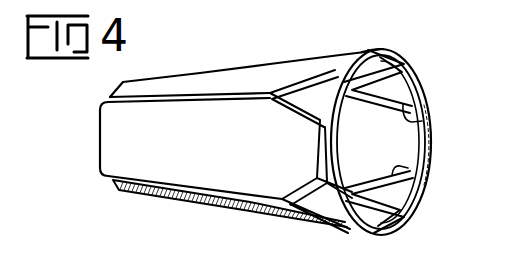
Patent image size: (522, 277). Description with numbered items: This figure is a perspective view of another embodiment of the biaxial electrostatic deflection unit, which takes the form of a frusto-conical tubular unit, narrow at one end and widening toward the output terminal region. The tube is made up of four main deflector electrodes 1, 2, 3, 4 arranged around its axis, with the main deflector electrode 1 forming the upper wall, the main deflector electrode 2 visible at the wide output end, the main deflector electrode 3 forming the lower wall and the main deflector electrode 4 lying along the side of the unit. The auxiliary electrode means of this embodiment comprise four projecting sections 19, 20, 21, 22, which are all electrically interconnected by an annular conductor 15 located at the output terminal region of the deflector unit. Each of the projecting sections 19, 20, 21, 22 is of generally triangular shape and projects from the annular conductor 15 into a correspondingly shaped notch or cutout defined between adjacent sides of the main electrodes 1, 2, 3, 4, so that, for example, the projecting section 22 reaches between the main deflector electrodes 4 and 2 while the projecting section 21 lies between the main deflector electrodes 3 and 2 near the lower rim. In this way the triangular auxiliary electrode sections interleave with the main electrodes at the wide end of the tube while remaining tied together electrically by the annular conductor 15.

The main deflector electrode 1 is at (243, 68).
The main deflector electrode 2 is at (412, 148).
The main deflector electrode 3 is at (260, 214).
The main deflector electrode 4 is at (187, 108).
The annular conductor 15 is at (385, 50).
The projecting section 19 is at (423, 113).
The projecting section 20 is at (420, 172).
The projecting section 21 is at (322, 229).
The projecting section 22 is at (300, 114).